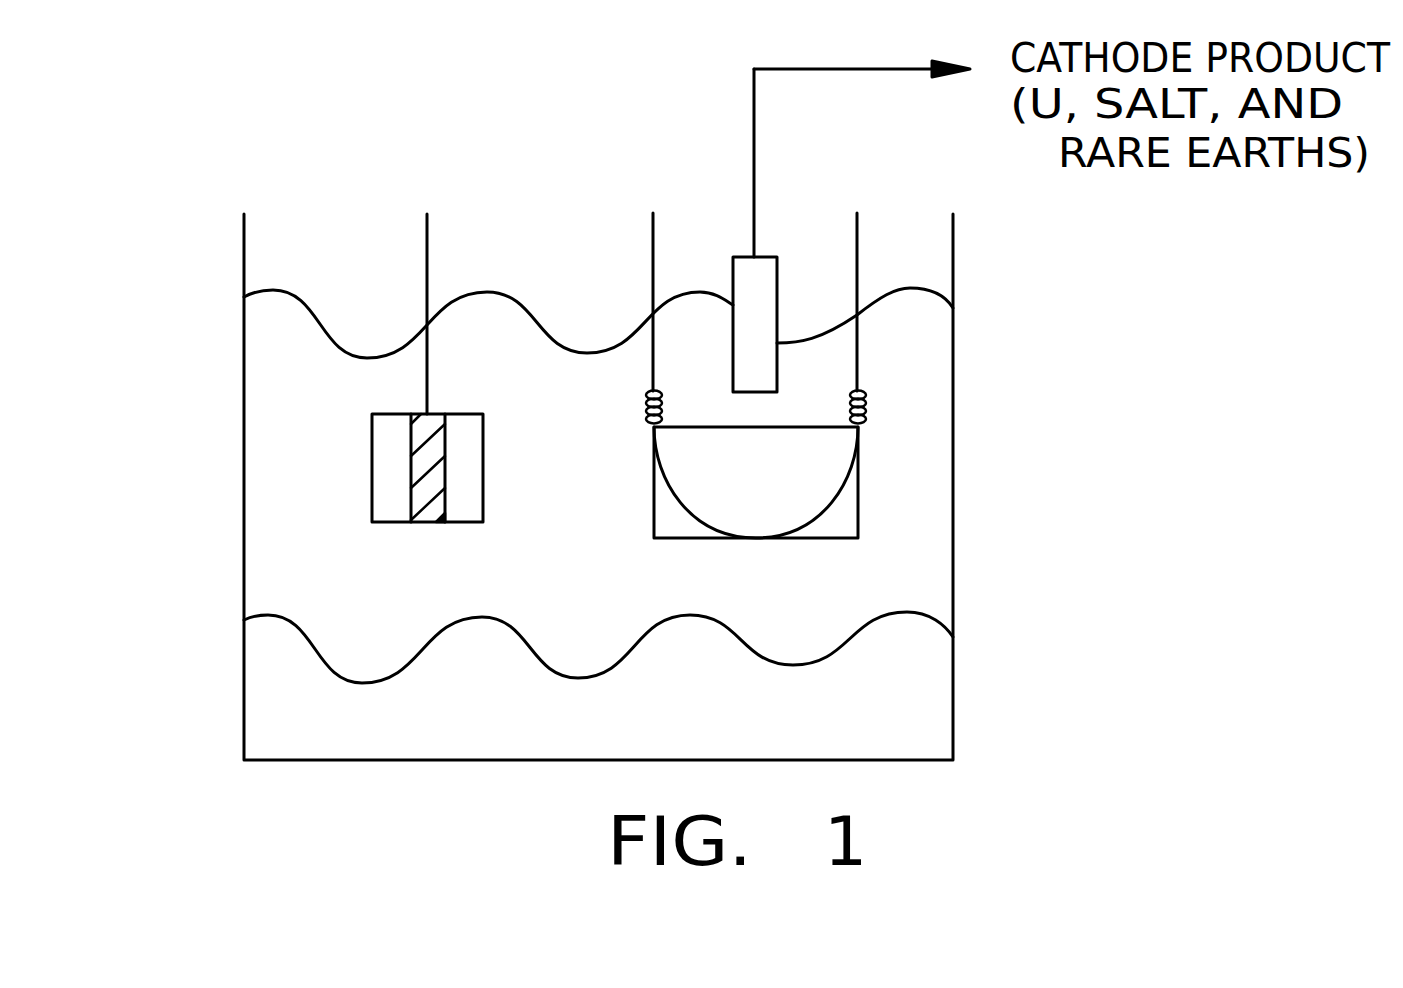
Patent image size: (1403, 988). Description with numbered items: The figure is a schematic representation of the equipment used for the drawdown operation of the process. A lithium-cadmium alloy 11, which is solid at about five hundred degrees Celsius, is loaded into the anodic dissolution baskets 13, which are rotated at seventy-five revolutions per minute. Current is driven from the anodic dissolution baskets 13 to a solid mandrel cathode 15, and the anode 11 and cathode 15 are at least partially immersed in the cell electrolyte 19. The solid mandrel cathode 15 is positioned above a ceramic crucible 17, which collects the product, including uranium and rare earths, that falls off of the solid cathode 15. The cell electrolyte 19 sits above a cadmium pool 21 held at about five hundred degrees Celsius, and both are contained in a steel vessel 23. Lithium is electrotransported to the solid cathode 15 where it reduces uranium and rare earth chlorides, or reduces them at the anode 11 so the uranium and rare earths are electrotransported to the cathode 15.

The lithium-cadmium alloy 11 is at (411, 470).
The anodic dissolution baskets 13 is at (372, 430).
The solid mandrel cathode 15 is at (777, 275).
The ceramic crucible 17 is at (858, 458).
The cell electrolyte 19 is at (606, 565).
The cadmium pool 21 is at (880, 721).
The steel vessel 23 is at (244, 252).